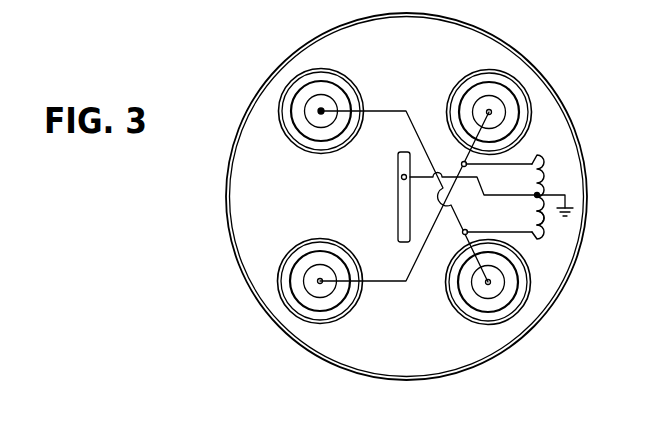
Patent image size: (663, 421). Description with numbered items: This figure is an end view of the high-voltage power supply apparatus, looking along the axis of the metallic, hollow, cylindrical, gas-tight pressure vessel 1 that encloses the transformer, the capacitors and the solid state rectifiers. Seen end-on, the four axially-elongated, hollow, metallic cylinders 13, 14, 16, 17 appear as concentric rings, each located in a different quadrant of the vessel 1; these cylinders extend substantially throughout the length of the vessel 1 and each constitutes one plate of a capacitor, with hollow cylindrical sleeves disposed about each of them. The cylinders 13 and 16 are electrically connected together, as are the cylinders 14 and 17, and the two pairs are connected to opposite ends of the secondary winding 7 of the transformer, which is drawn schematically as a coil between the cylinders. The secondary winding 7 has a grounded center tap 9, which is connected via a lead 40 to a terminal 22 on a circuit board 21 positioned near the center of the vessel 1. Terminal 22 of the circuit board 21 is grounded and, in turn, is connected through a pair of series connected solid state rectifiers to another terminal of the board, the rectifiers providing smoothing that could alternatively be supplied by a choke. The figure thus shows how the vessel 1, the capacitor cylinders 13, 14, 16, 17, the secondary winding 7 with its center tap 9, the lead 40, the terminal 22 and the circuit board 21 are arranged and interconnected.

The pressure vessel 1 is at (275, 67).
The secondary winding 7 is at (543, 160).
The grounded center tap 9 is at (533, 209).
The elongated cylinder 13 is at (480, 102).
The elongated cylinder 14 is at (324, 122).
The elongated cylinder 16 is at (310, 288).
The elongated cylinder 17 is at (497, 290).
The circuit board 21 is at (398, 160).
The terminal 22 is at (398, 182).
The lead 40 is at (482, 178).